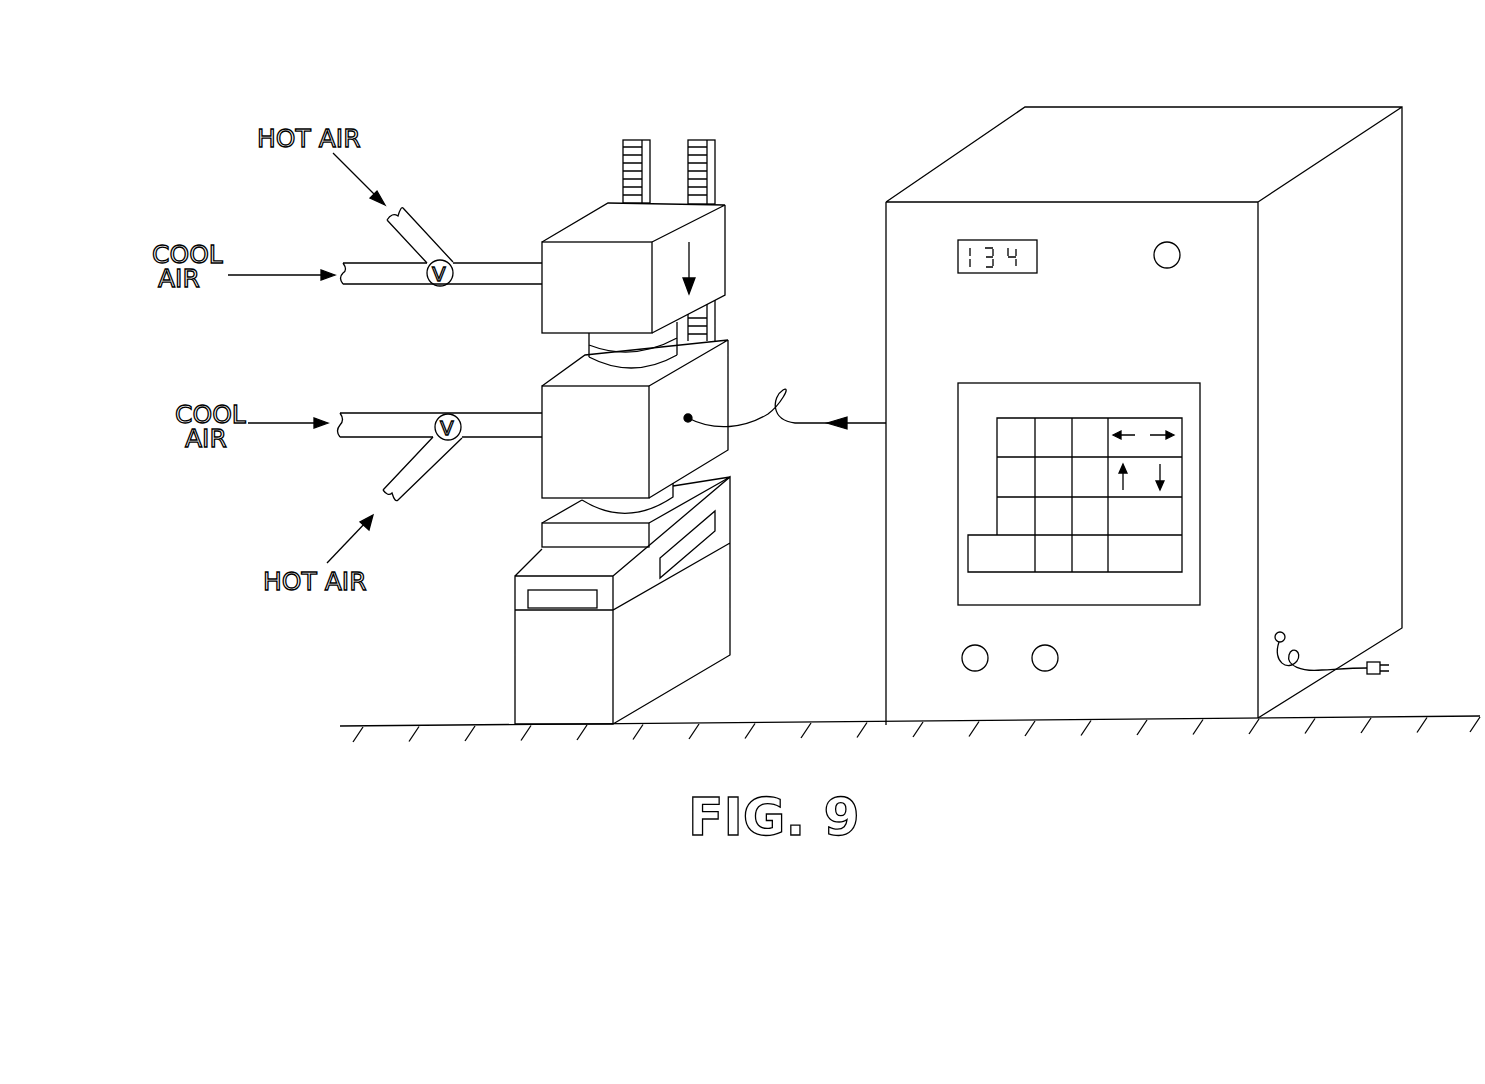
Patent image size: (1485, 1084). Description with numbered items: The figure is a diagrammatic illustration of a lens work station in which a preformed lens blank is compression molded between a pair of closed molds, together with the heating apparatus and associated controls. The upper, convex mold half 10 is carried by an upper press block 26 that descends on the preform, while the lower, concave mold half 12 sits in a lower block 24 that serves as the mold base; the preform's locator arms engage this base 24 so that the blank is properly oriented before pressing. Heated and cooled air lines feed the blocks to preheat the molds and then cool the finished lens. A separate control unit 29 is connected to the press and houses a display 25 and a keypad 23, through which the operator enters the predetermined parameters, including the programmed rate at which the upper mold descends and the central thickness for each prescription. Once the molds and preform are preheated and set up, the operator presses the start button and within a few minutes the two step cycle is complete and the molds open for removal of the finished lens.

The convex mold half 10 is at (600, 347).
The concave mold half 12 is at (603, 350).
The keypad 23 is at (1093, 418).
The mold base 24 is at (565, 468).
The display 25 is at (997, 238).
The upper block 26 is at (583, 258).
The control unit 29 is at (1144, 416).